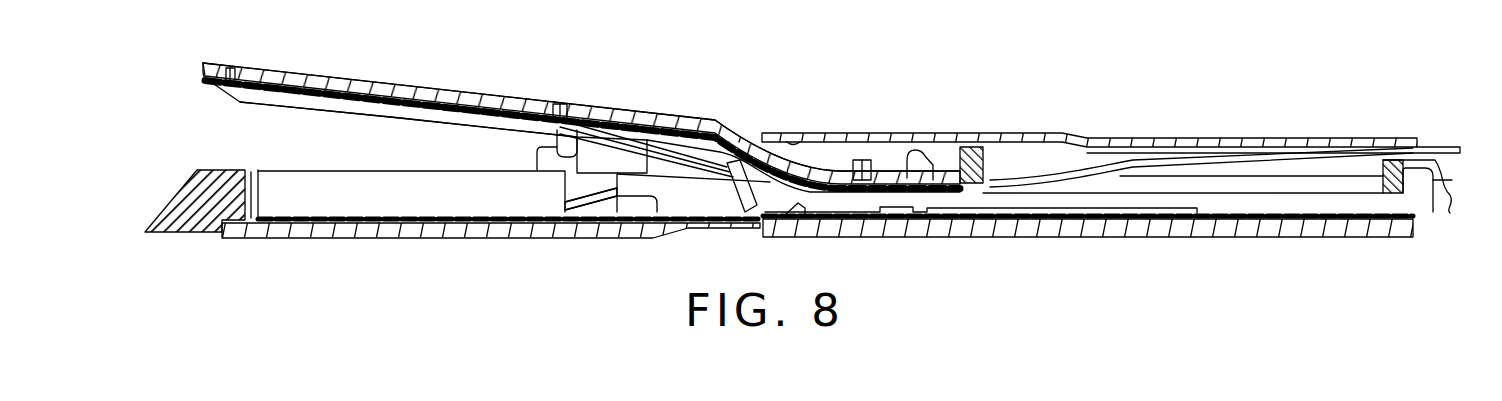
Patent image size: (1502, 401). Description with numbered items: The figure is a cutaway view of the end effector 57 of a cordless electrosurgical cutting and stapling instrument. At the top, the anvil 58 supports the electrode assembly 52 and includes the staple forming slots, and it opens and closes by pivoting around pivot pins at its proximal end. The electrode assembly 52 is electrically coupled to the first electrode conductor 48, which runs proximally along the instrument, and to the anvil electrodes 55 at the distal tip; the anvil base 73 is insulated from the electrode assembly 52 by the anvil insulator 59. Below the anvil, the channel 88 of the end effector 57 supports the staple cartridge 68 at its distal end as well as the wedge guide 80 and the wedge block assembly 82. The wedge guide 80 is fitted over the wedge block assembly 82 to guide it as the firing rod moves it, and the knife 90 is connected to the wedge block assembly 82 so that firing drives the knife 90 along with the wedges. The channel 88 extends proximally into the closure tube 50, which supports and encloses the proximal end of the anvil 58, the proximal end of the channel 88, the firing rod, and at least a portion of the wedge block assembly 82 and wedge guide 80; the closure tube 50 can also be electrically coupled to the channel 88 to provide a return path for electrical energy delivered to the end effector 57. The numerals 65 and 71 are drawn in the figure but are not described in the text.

The first electrode conductor 48 is at (1208, 152).
The closure tube 50 is at (1027, 133).
The electrode assembly 52 is at (437, 124).
The anvil electrodes 55 is at (328, 115).
The end effector 57 is at (197, 129).
The anvil 58 is at (328, 64).
The anvil insulator 59 is at (523, 100).
The pivot block 65 is at (627, 170).
The staple cartridge 68 is at (197, 170).
The prong 71 is at (835, 190).
The anvil base 73 is at (428, 95).
The wedge guide 80 is at (692, 198).
The wedge block assembly 82 is at (978, 147).
The channel 88 is at (370, 238).
The knife 90 is at (1316, 202).